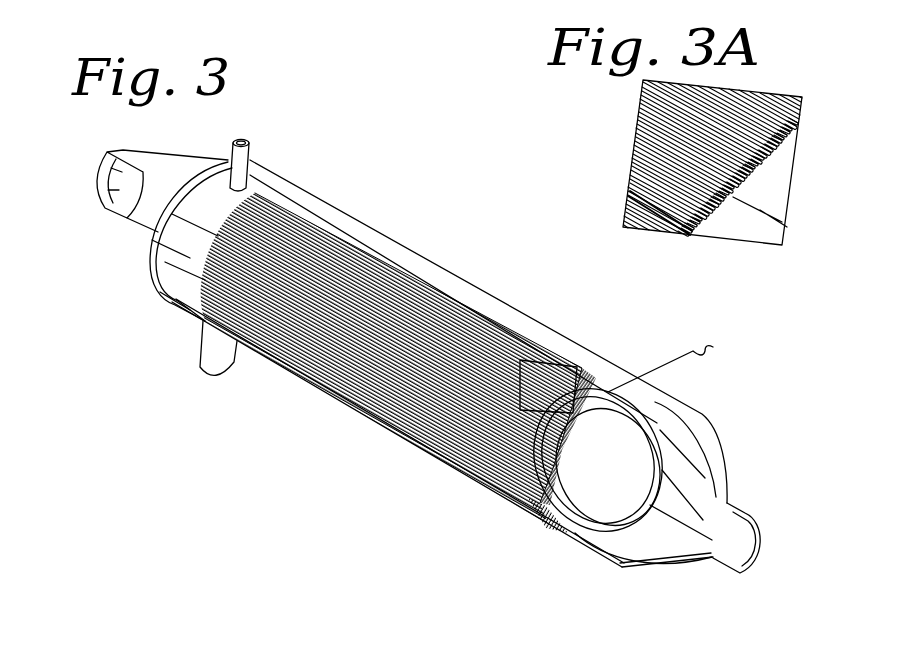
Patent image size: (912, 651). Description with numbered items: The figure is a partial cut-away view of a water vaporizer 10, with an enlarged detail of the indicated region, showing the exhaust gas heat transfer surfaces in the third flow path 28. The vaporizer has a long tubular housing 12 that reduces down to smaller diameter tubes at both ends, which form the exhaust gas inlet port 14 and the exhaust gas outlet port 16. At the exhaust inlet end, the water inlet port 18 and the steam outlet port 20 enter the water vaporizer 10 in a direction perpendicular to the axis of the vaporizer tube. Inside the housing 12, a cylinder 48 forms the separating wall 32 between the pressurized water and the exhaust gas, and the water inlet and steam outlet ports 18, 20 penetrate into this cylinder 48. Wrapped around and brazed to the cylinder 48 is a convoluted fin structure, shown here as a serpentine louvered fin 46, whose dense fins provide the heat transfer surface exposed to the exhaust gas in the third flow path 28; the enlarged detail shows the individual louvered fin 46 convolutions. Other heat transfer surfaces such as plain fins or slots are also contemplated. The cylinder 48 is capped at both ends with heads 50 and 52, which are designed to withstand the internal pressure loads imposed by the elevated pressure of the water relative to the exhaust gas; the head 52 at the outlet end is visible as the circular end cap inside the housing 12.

In FIG. 3, the water vaporizer 10 is at (352, 186).
In FIG. 3, the tubular housing 12 is at (450, 287).
In FIG. 3, the exhaust gas inlet port 14 is at (150, 223).
In FIG. 3, the exhaust gas outlet port 16 is at (743, 537).
In FIG. 3, the water inlet port 18 is at (247, 140).
In FIG. 3, the steam outlet port 20 is at (216, 352).
In FIG. 3, the third flow path 28 is at (345, 418).
In FIG. 3, the separating wall 32 is at (187, 297).
In FIG. 3, the serpentine louvered fin 46 is at (547, 530).
In FIG. 3A, the serpentine louvered fin 46 is at (757, 173).
In FIG. 3, the cylinder 48 is at (165, 296).
In FIG. 3, the head 50 is at (153, 221).
In FIG. 3, the head 52 is at (595, 490).